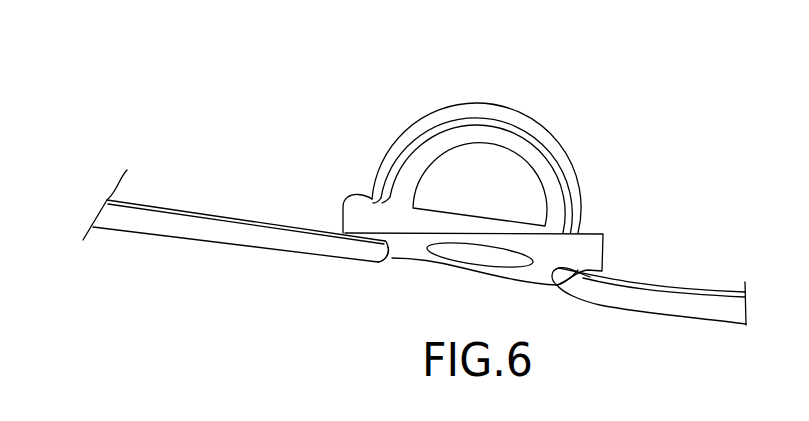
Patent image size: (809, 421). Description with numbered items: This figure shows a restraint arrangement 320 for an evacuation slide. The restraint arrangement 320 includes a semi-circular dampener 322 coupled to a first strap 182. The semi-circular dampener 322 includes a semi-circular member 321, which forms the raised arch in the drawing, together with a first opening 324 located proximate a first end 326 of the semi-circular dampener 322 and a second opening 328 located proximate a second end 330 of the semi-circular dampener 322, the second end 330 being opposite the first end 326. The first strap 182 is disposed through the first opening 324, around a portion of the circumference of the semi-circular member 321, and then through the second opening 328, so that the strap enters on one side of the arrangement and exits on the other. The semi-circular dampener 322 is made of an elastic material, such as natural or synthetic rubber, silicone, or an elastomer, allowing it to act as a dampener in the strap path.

The first strap 182 is at (503, 115).
The restraint arrangement 320 is at (517, 210).
The semi-circular member 321 is at (548, 177).
The semi-circular dampener 322 is at (421, 116).
The first opening 324 is at (572, 292).
The first end 326 is at (606, 243).
The second opening 328 is at (383, 258).
The second end 330 is at (350, 210).